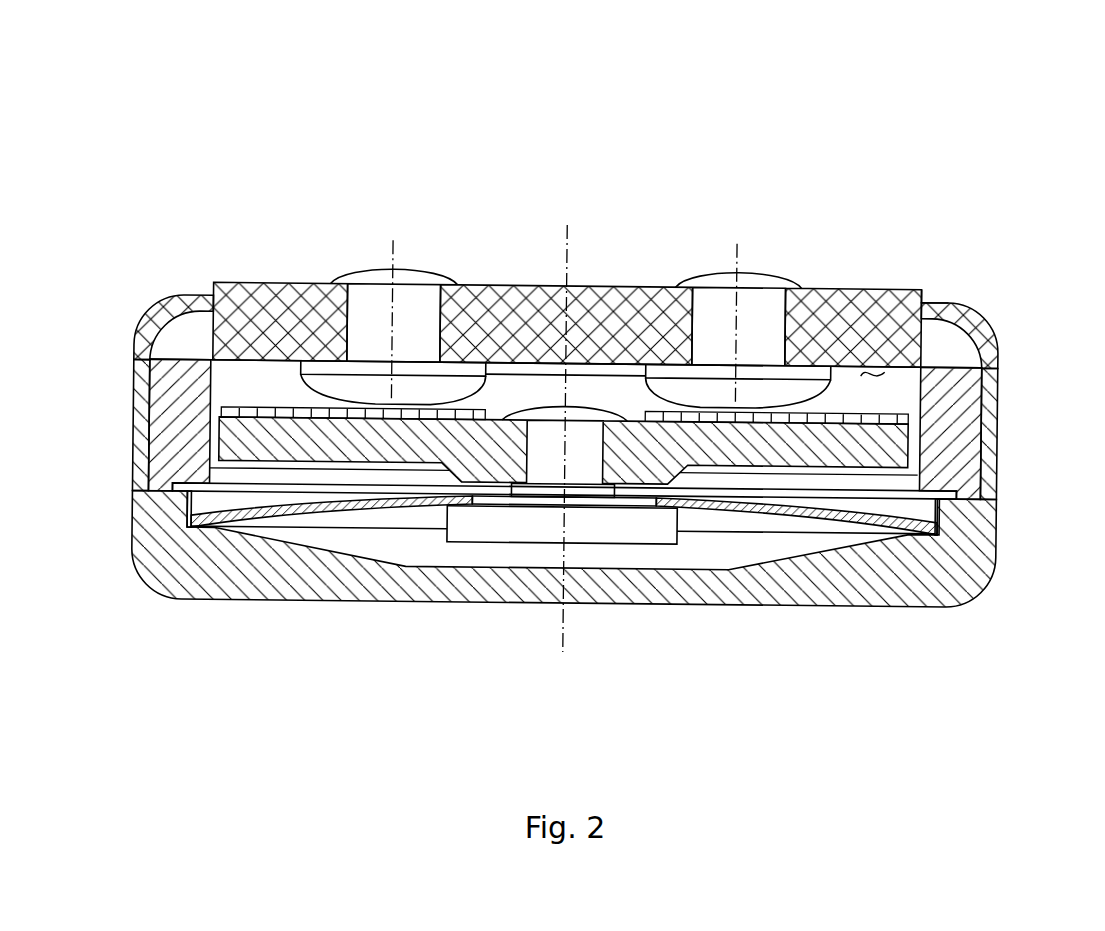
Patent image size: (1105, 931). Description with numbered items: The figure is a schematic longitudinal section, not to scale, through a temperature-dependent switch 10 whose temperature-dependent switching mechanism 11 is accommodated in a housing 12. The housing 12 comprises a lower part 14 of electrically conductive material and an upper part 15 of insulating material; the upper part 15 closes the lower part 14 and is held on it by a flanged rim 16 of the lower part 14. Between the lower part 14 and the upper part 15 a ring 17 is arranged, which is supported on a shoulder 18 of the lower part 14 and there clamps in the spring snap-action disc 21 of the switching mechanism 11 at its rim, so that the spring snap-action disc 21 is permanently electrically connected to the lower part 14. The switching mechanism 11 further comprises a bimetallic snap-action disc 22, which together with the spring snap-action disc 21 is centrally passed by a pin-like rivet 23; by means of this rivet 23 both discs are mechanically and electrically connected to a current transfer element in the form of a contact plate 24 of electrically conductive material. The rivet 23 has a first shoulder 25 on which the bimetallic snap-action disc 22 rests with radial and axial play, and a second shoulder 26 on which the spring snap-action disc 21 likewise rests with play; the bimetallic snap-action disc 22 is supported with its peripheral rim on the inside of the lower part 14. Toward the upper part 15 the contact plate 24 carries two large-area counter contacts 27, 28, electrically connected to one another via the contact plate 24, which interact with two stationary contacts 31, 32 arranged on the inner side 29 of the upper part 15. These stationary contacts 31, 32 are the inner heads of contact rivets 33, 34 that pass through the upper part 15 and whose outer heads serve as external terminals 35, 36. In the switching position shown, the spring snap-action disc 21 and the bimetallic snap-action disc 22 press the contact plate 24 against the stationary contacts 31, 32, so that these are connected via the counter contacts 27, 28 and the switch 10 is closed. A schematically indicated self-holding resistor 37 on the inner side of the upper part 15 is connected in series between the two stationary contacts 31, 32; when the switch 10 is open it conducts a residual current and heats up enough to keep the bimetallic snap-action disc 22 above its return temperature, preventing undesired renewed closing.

The temperature-dependent switch 10 is at (755, 137).
The temperature-dependent switching mechanism 11 is at (392, 511).
The housing 12 is at (893, 315).
The lower part 14 is at (943, 590).
The upper part 15 is at (932, 353).
The flanged rim 16 is at (993, 323).
The ring 17 is at (935, 448).
The shoulder 18 is at (173, 490).
The spring snap-action disc 21 is at (882, 493).
The bimetallic snap-action disc 22 is at (823, 512).
The rivet 23 is at (582, 477).
The contact plate 24 is at (248, 440).
The first shoulder 25 is at (497, 505).
The second shoulder 26 is at (538, 490).
The counter contact 27 is at (262, 412).
The counter contact 28 is at (873, 408).
The inner side 29 is at (955, 305).
The stationary contact 31 is at (330, 383).
The stationary contact 32 is at (770, 388).
The contact rivet 33 is at (373, 323).
The contact rivet 34 is at (770, 320).
The external terminal 35 is at (377, 272).
The external terminal 36 is at (748, 288).
The self-holding resistor 37 is at (516, 363).